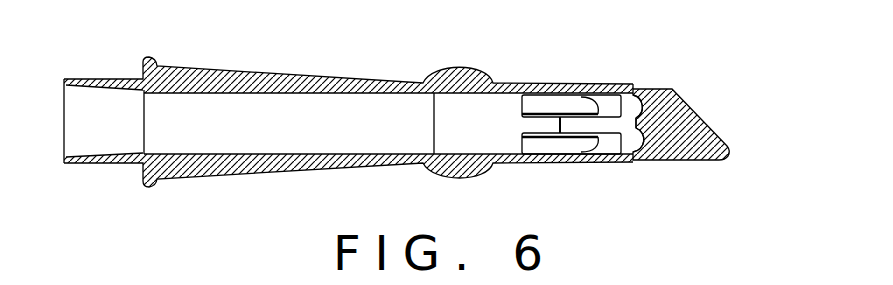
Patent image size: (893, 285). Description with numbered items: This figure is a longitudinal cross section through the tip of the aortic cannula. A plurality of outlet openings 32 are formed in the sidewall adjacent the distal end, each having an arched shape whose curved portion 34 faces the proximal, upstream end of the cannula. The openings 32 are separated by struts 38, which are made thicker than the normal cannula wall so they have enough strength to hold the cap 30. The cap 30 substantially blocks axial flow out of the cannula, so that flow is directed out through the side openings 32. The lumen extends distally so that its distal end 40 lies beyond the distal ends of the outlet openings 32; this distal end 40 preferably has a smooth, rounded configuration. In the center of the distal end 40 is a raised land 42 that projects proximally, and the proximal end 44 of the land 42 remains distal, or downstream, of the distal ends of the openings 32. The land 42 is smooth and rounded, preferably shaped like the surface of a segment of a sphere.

The cap 30 is at (690, 115).
The outlet openings 32 is at (603, 103).
The curved portion 34 is at (597, 96).
The struts 38 is at (555, 122).
The distal end of the lumen 40 is at (634, 158).
The raised land 42 is at (652, 128).
The proximal end of the land 44 is at (636, 100).